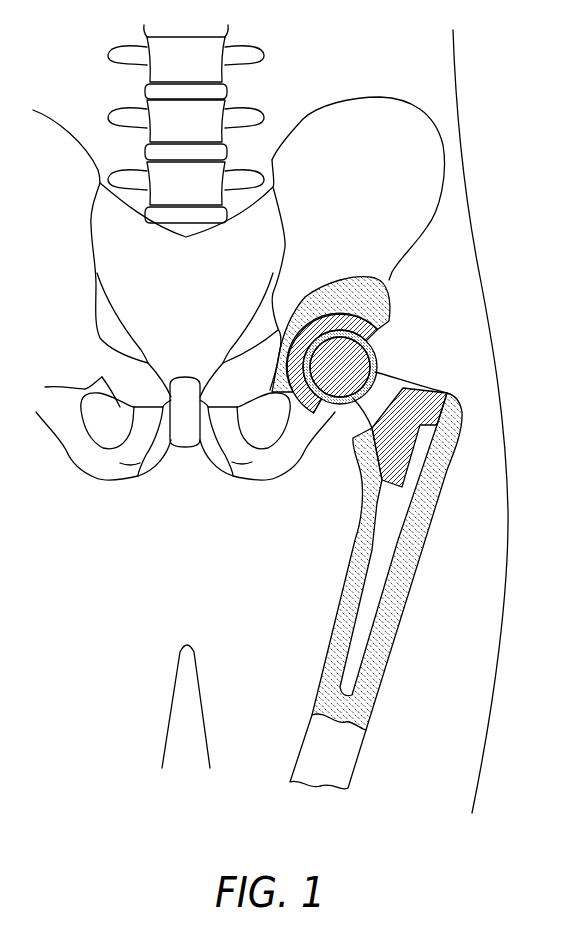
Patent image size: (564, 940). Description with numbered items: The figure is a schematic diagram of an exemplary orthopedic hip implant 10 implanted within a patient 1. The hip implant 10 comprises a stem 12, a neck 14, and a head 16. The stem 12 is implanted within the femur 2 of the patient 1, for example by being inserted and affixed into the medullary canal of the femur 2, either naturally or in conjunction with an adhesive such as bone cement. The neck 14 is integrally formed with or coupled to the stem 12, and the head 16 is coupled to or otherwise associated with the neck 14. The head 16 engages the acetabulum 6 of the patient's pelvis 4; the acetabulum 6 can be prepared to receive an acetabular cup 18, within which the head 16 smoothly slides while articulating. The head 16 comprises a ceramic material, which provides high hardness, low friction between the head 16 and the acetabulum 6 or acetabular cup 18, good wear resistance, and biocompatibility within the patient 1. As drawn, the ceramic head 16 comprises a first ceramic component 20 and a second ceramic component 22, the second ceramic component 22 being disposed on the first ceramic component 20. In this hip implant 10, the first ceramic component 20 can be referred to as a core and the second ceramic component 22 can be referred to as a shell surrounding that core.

The patient 1 is at (480, 270).
The femur 2 is at (312, 754).
The pelvis 4 is at (428, 176).
The acetabulum 6 is at (290, 335).
The orthopedic hip implant 10 is at (457, 332).
The stem 12 is at (370, 593).
The neck 14 is at (380, 384).
The head 16 is at (357, 331).
The acetabular cup 18 is at (309, 330).
The first ceramic component 20 is at (357, 363).
The second ceramic component 22 is at (303, 405).